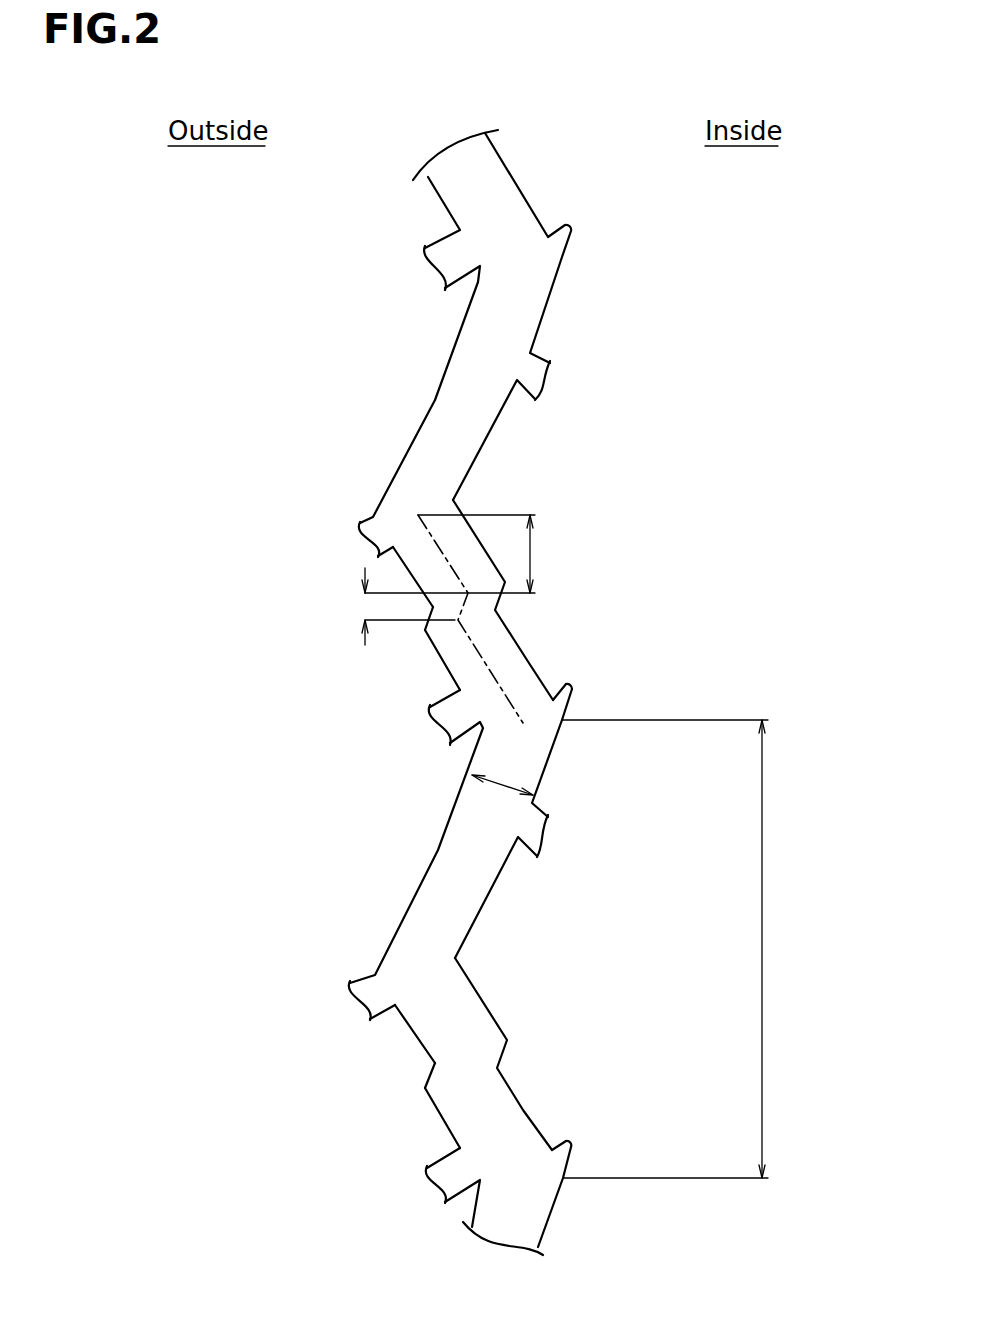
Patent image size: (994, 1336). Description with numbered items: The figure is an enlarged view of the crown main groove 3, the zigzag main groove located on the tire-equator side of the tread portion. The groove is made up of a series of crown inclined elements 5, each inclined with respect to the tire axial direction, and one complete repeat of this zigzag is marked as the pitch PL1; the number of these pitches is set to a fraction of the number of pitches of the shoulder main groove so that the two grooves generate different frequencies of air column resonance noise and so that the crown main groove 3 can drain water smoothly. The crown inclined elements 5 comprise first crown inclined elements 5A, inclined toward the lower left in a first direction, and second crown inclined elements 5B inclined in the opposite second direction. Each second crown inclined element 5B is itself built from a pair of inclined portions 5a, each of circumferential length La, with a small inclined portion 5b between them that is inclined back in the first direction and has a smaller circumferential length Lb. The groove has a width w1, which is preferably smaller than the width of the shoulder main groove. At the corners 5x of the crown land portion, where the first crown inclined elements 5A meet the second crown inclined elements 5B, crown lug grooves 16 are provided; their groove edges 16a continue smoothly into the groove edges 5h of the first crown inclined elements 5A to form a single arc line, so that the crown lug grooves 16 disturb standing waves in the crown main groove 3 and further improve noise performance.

The crown main groove 3 is at (477, 188).
The crown inclined elements 5 is at (658, 963).
The first crown inclined elements 5A is at (497, 360).
The second crown inclined elements 5B is at (190, 463).
The inclined portions 5a is at (425, 562).
The small inclined portion 5b is at (482, 617).
The corners 5x is at (520, 725).
The groove edges 5h is at (541, 778).
The crown lug grooves 16 is at (562, 695).
The groove edges 16a is at (570, 702).
The length La is at (530, 568).
The circumferential length Lb is at (389, 606).
The width w1 is at (505, 786).
The zigzag pitch PL1 is at (696, 949).